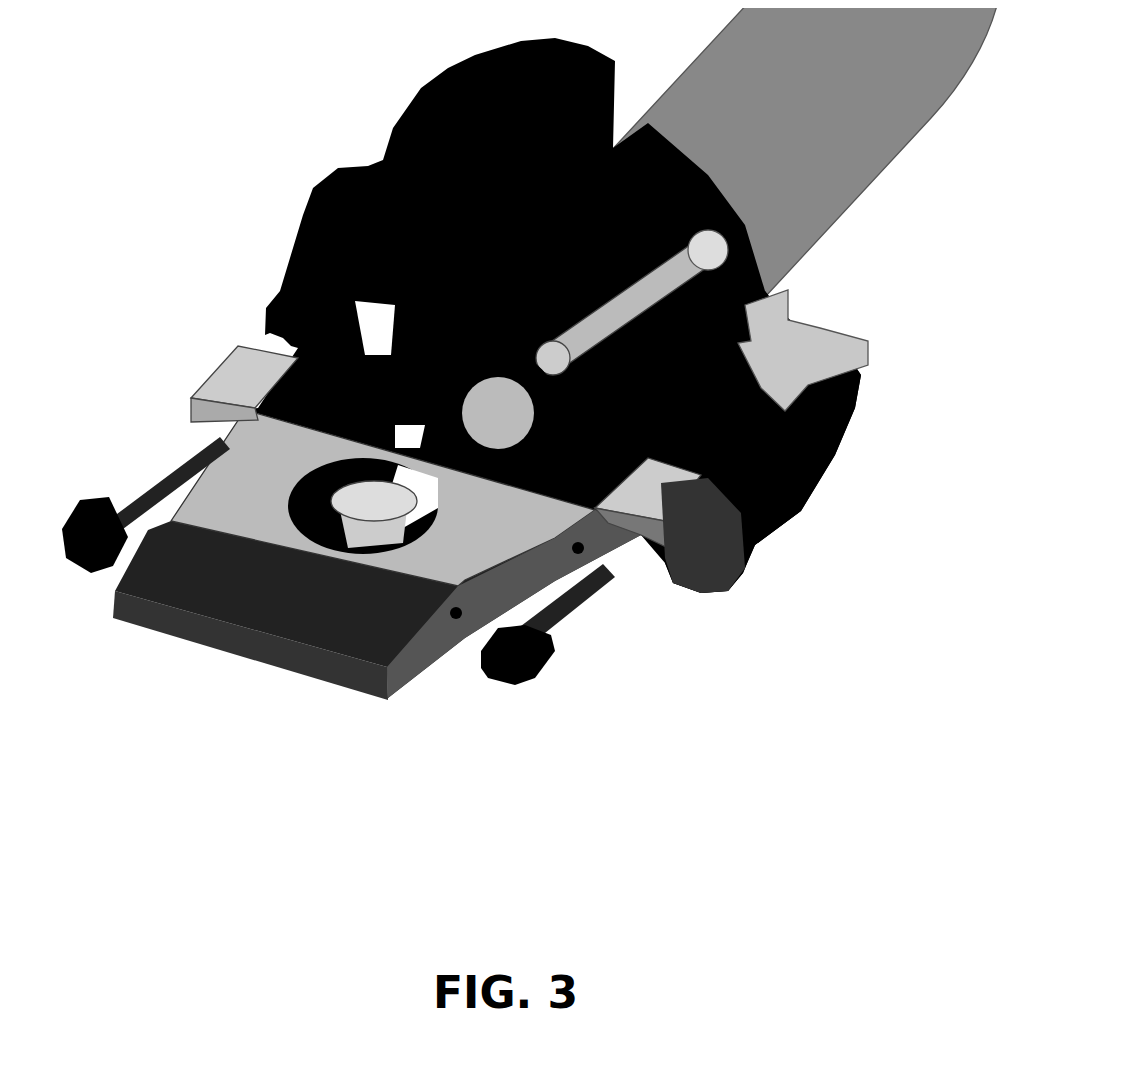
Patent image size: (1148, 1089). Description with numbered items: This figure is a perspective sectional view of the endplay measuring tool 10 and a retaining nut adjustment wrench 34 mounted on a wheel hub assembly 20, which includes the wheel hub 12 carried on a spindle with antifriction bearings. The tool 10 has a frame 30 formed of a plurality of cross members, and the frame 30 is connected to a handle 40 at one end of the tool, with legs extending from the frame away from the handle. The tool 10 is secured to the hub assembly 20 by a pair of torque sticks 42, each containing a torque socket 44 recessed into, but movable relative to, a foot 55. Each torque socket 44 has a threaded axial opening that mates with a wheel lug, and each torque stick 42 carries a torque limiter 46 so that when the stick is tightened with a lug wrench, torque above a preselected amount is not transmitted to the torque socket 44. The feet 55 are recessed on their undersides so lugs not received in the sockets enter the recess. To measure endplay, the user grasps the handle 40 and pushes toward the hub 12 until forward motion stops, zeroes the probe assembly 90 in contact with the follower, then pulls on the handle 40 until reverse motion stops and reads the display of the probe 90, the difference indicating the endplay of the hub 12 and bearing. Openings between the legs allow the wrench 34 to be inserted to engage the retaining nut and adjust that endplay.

The endplay measuring tool 10 is at (565, 745).
The wheel hub 12 is at (825, 327).
The wheel hub assembly 20 is at (850, 380).
The frame 30 is at (423, 653).
The wrench 34 is at (683, 242).
The handle 40 is at (116, 597).
The torque stick 42 is at (590, 594).
The torque socket 44 is at (770, 457).
The torque limiter 46 is at (667, 517).
The foot 55 is at (723, 343).
The probe assembly 90 is at (326, 507).